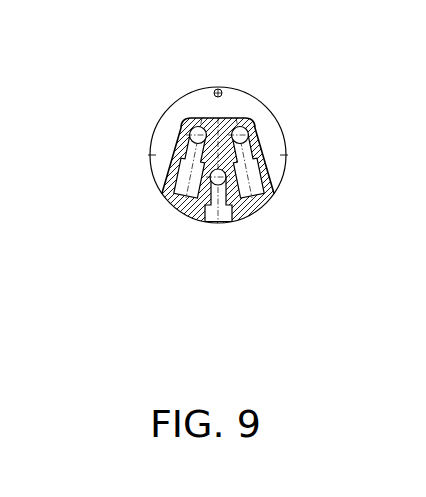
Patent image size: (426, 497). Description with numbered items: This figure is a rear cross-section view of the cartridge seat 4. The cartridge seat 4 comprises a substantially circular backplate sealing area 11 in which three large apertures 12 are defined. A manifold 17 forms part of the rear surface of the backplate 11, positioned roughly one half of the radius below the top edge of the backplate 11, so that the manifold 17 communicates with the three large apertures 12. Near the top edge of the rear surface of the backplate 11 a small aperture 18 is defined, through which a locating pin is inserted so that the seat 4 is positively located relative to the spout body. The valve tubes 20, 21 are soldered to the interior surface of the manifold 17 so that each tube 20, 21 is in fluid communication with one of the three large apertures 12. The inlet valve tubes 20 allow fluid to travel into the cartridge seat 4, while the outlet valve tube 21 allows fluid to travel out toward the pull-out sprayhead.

The cartridge seat 4 is at (337, 151).
The backplate sealing area 11 is at (280, 127).
The large apertures 12 is at (225, 178).
The manifold 17 is at (177, 132).
The small aperture 18 is at (218, 88).
The inlet valve tubes 20 is at (260, 185).
The outlet valve tube 21 is at (238, 218).